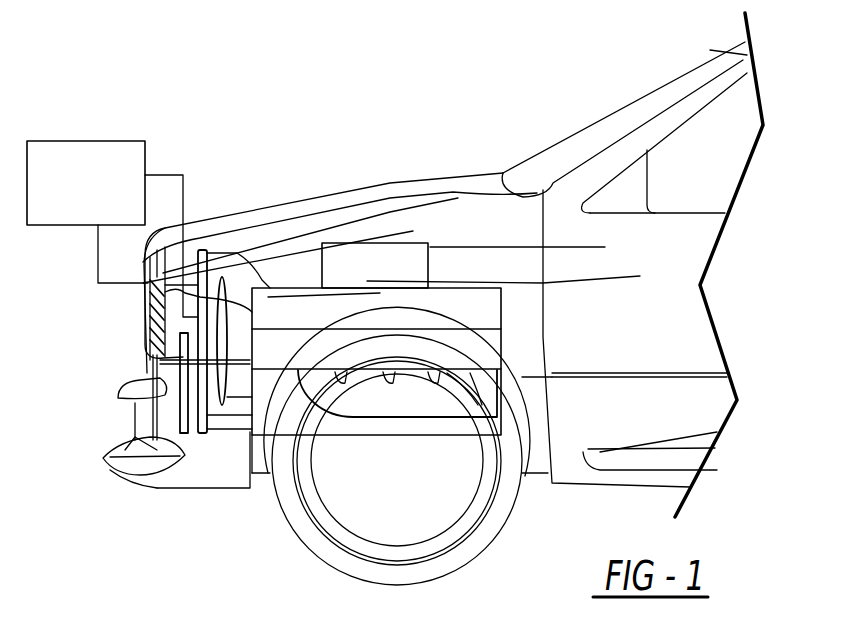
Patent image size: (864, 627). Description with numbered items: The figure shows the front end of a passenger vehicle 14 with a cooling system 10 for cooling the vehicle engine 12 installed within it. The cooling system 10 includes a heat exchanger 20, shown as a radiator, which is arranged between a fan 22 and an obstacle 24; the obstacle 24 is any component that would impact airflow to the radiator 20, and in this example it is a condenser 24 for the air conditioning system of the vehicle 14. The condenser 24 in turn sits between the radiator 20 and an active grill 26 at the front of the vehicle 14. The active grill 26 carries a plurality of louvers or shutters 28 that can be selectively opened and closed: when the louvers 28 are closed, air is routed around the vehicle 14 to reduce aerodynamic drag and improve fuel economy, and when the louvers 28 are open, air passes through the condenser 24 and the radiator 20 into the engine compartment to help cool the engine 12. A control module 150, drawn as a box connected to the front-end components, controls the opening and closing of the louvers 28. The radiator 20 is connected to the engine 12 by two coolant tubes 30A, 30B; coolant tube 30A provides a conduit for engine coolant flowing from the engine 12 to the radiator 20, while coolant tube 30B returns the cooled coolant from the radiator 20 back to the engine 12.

The cooling system 10 is at (186, 98).
The engine 12 is at (357, 288).
The vehicle 14 is at (627, 325).
The heat exchanger 20 is at (200, 433).
The fan 22 is at (217, 378).
The obstacle 24 is at (183, 437).
The active grill 26 is at (150, 378).
The louvers 28 is at (148, 298).
The coolant tube 30A is at (272, 288).
The coolant tube 30B is at (227, 432).
The control module 150 is at (110, 141).